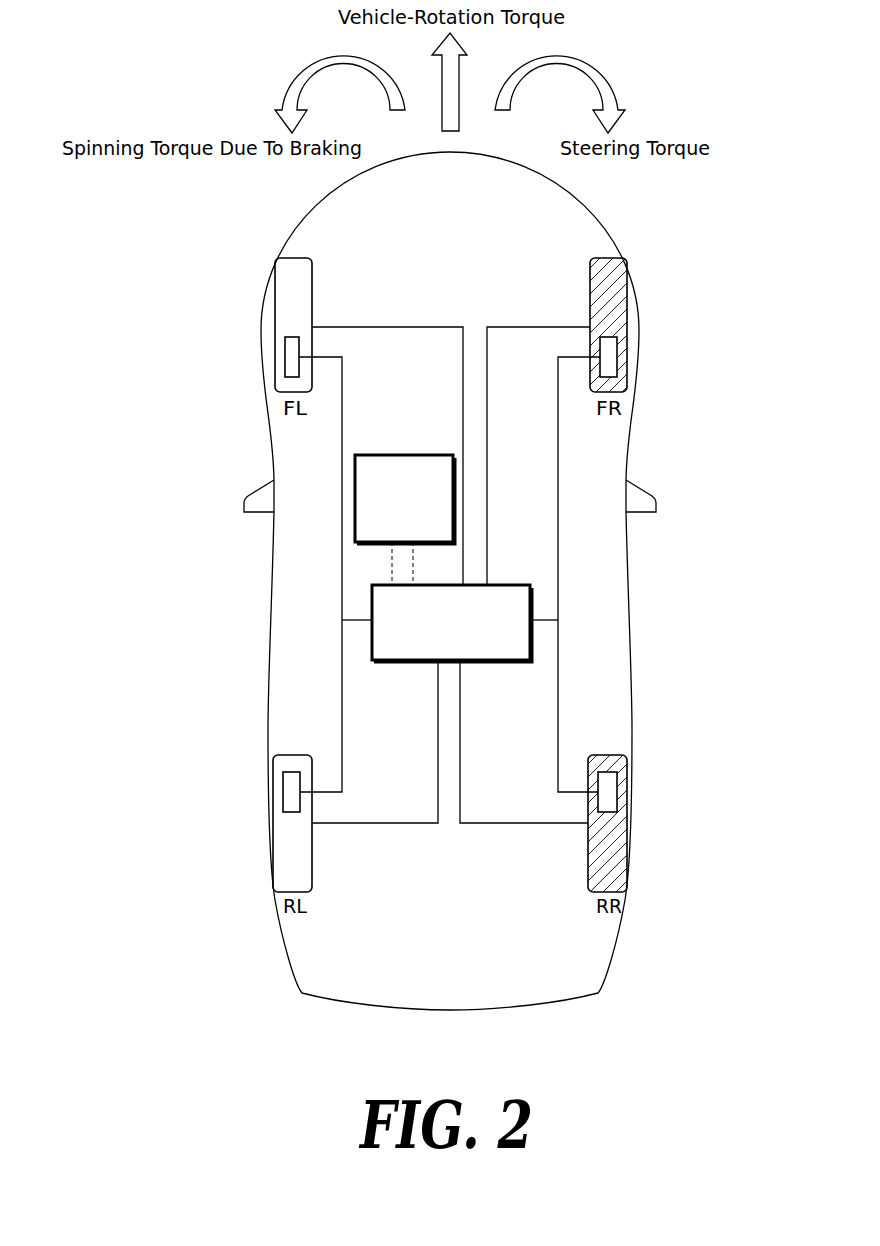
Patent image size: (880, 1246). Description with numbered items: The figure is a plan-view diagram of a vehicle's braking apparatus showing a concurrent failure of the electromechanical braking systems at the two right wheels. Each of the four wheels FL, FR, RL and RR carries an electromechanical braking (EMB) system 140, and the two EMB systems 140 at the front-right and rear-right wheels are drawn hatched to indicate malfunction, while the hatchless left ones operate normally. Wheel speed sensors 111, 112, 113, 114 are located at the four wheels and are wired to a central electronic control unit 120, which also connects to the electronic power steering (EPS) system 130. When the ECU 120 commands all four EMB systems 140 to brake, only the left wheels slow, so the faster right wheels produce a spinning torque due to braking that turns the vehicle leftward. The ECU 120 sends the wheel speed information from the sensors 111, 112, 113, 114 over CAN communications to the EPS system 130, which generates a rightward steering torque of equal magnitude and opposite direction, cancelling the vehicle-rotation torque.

The wheel speed sensor 111 is at (285, 350).
The wheel speed sensor 112 is at (617, 350).
The wheel speed sensor 113 is at (283, 788).
The wheel speed sensor 114 is at (617, 788).
The electronic control unit 120 is at (502, 585).
The electronic power steering system 130 is at (395, 455).
The electromechanical braking system 140 is at (277, 288).